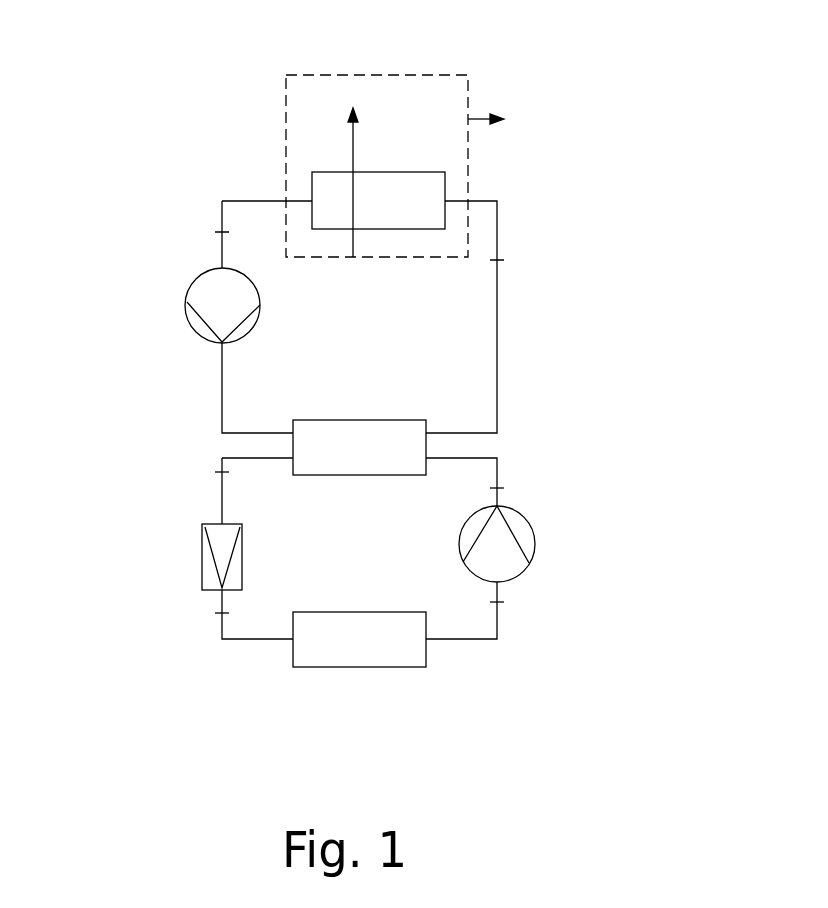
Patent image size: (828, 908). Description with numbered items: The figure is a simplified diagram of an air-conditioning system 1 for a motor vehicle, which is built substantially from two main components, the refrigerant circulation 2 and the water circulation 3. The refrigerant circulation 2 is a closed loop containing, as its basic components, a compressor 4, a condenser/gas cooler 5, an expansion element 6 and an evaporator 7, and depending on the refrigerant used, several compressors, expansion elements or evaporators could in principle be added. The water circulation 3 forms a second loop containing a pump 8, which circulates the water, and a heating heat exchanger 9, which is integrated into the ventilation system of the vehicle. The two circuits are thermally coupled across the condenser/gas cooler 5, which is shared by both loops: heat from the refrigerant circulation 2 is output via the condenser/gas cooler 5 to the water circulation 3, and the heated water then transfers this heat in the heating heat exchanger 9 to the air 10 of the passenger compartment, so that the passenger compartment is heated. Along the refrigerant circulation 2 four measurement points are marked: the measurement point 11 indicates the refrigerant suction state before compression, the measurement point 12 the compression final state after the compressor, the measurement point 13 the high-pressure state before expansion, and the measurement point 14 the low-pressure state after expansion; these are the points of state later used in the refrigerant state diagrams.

The heat pump system 1 is at (586, 115).
The refrigerant circulation 2 is at (497, 456).
The water circulation 3 is at (241, 200).
The compressor 4 is at (534, 530).
The condenser/gas cooler 5 is at (350, 435).
The expansion element 6 is at (200, 548).
The evaporator 7 is at (403, 648).
The pump 8 is at (195, 280).
The heating heat exchanger 9 is at (427, 213).
The air 10 is at (343, 157).
The measurement point 11 is at (518, 602).
The measurement point 12 is at (518, 488).
The measurement point 13 is at (203, 473).
The measurement point 14 is at (203, 613).